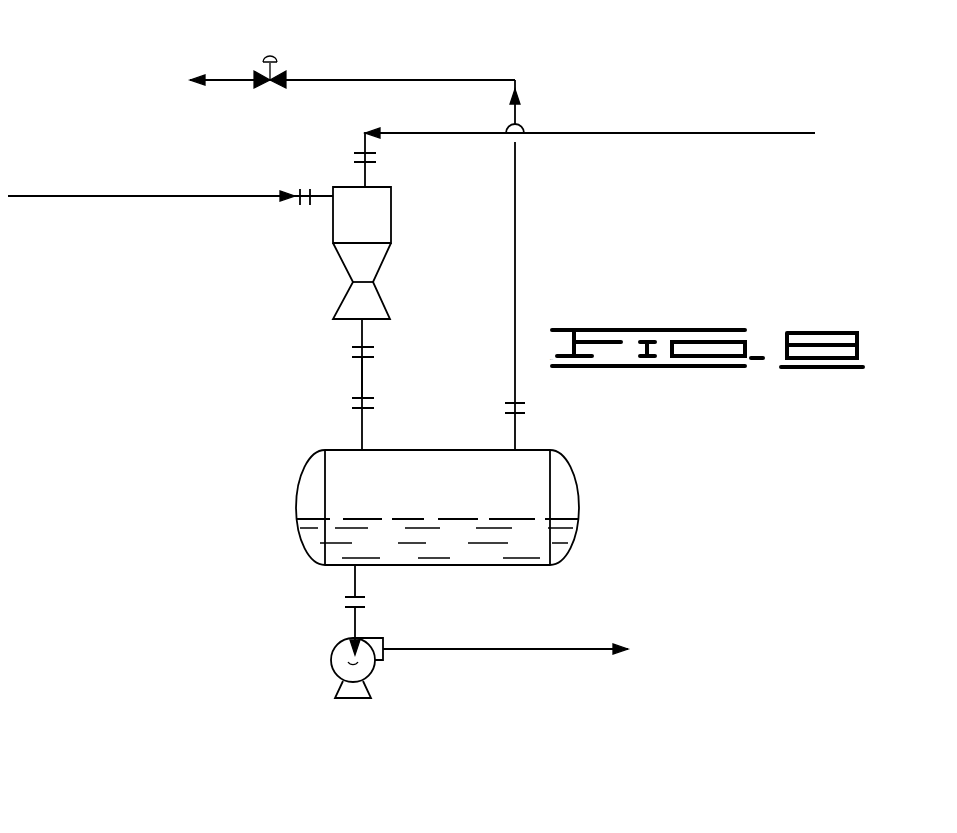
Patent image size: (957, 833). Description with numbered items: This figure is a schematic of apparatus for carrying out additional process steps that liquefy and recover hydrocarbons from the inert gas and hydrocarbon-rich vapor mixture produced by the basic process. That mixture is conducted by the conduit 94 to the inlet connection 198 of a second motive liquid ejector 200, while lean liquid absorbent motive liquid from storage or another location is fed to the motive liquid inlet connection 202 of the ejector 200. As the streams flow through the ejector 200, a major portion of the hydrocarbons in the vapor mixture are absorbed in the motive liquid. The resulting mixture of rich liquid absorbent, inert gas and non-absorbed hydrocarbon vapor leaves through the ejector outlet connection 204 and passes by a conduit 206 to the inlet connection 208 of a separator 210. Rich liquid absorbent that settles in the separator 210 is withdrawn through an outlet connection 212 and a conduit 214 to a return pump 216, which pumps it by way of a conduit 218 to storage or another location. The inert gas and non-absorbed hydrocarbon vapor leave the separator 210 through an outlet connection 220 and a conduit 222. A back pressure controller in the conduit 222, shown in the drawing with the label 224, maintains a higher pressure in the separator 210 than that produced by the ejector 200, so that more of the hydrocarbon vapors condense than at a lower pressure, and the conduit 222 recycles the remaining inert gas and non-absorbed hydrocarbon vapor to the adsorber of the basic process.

The conduit 94 is at (238, 198).
The inlet connection 198 is at (320, 200).
The second motive liquid ejector 200 is at (391, 218).
The motive liquid inlet connection 202 is at (364, 178).
The ejector outlet connection 204 is at (363, 335).
The conduit 206 is at (363, 380).
The inlet connection 208 is at (363, 430).
The separator 210 is at (300, 478).
The outlet connection 212 is at (357, 580).
The conduit 214 is at (350, 622).
The return pump 216 is at (365, 665).
The conduit 218 is at (518, 648).
The outlet connection 220 is at (516, 426).
The conduit 222 is at (516, 277).
The pressure controller valve 224 is at (268, 58).